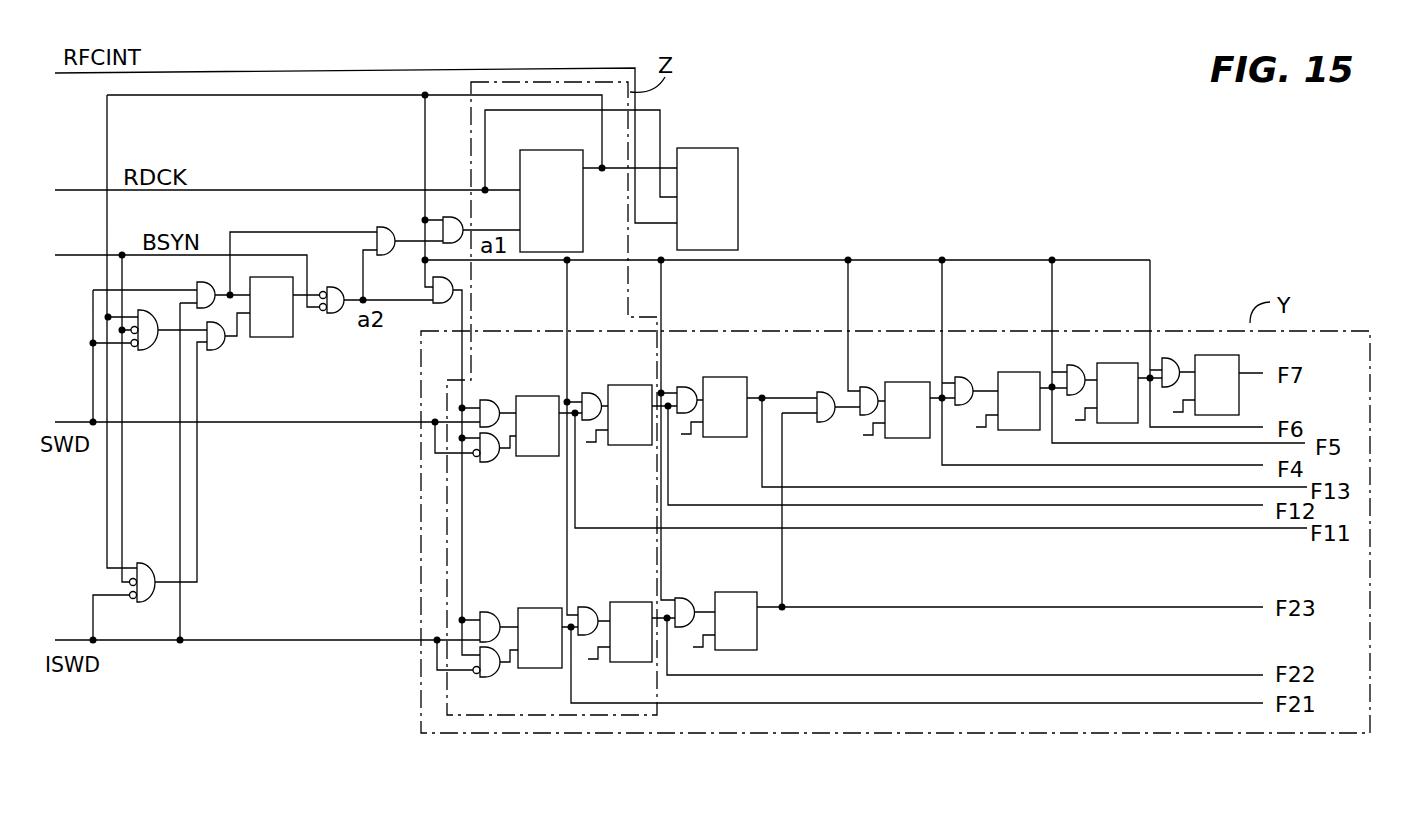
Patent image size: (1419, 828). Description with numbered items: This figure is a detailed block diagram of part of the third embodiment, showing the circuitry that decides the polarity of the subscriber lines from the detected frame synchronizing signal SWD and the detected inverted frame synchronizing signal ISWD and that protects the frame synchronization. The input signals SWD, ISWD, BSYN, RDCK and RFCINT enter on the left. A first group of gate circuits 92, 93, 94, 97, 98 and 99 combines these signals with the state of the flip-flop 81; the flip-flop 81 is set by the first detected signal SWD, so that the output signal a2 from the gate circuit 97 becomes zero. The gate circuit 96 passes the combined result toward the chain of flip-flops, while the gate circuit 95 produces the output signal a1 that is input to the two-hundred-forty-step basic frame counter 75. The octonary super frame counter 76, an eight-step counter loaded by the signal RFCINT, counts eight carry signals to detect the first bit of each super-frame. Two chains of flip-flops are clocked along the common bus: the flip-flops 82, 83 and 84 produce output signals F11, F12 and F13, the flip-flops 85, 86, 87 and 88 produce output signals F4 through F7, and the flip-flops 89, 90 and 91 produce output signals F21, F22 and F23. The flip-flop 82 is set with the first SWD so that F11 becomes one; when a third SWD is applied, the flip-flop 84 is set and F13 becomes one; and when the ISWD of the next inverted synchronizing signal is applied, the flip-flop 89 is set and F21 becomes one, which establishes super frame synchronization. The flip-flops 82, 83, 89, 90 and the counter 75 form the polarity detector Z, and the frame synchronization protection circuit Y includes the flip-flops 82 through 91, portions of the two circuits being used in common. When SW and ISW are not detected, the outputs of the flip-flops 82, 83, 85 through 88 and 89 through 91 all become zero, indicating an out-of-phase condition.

The basic frame counter 75 is at (583, 235).
The super frame counter 76 is at (700, 148).
The flip-flop 81 is at (275, 337).
The flip-flop 82 is at (517, 396).
The flip-flop 83 is at (617, 385).
The flip-flop 84 is at (718, 377).
The flip-flop 85 is at (888, 382).
The flip-flop 86 is at (998, 372).
The flip-flop 87 is at (1097, 363).
The flip-flop 88 is at (1192, 355).
The flip-flop 89 is at (517, 608).
The flip-flop 90 is at (617, 602).
The flip-flop 91 is at (718, 592).
The gate circuit 92 is at (152, 350).
The gate circuit 93 is at (140, 563).
The gate circuit 94 is at (197, 285).
The gate circuit 95 is at (460, 218).
The gate circuit 96 is at (440, 303).
The gate circuit 97 is at (340, 313).
The gate circuit 98 is at (218, 350).
The gate circuit 99 is at (387, 257).